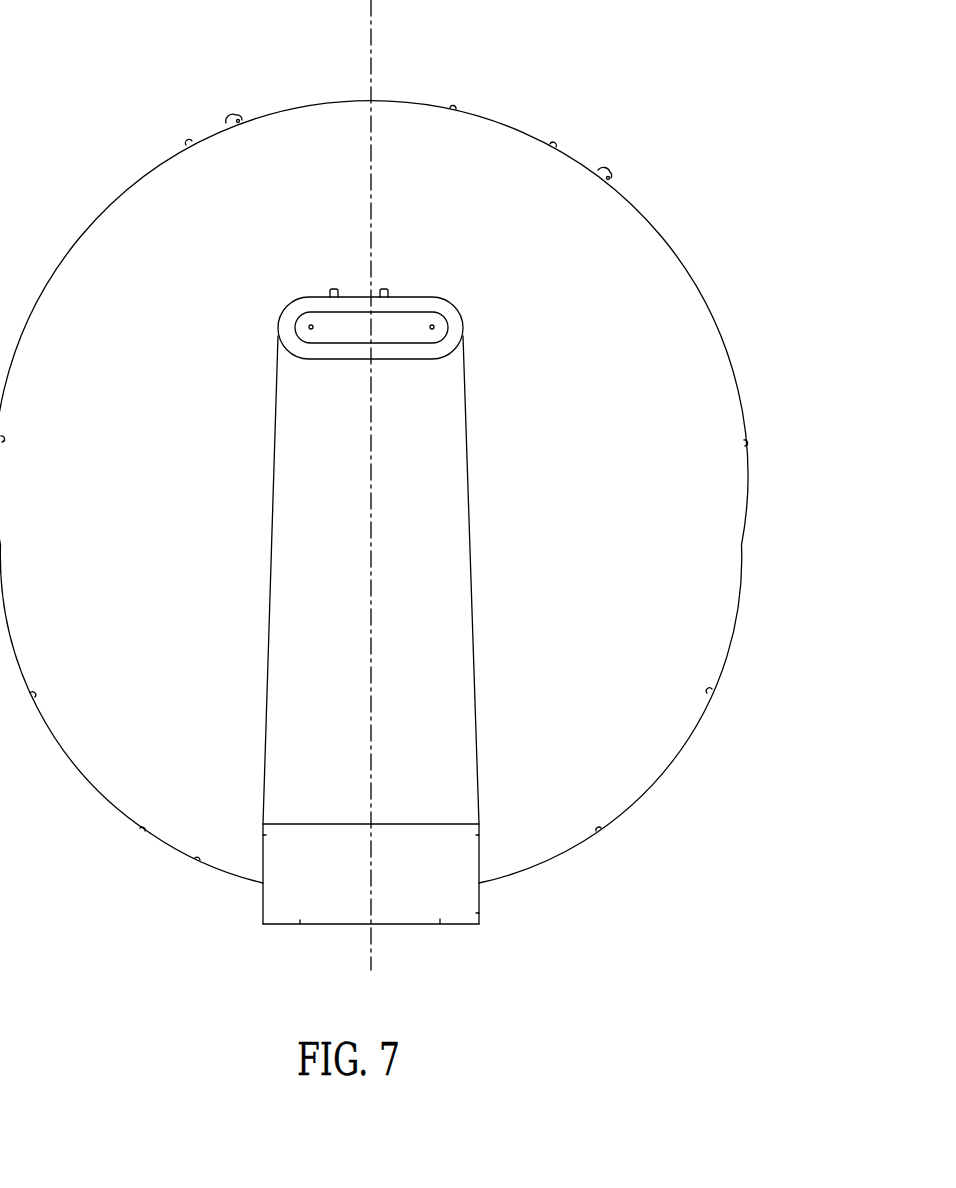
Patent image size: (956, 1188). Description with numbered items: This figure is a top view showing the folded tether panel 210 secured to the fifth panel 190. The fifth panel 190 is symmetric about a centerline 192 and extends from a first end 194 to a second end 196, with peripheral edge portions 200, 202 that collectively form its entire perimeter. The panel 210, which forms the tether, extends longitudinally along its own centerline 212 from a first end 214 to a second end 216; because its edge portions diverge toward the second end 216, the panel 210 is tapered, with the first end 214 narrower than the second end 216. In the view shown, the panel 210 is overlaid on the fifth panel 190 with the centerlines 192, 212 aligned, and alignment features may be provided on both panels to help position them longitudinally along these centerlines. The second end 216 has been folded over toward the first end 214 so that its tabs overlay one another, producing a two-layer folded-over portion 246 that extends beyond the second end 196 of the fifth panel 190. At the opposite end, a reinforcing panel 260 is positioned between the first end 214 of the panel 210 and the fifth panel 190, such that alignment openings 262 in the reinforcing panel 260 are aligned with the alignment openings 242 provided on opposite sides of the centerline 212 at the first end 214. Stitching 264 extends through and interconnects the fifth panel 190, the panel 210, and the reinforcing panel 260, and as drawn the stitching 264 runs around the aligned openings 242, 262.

The fifth panel 190 is at (374, 314).
The centerline 192 is at (438, 485).
The centerline 212 is at (373, 27).
The first end 194 is at (548, 127).
The second end 196 is at (178, 859).
The peripheral edge portion 200 is at (124, 819).
The peripheral edge portion 202 is at (591, 837).
The first end 214 is at (363, 352).
The reinforcing panel 260 is at (322, 322).
The stitching 264 is at (323, 358).
The openings 242 is at (363, 367).
The alignment openings 262 is at (486, 377).
The panel 210 is at (384, 667).
The folded-over portion 246 is at (262, 899).
The second end 216 is at (442, 926).